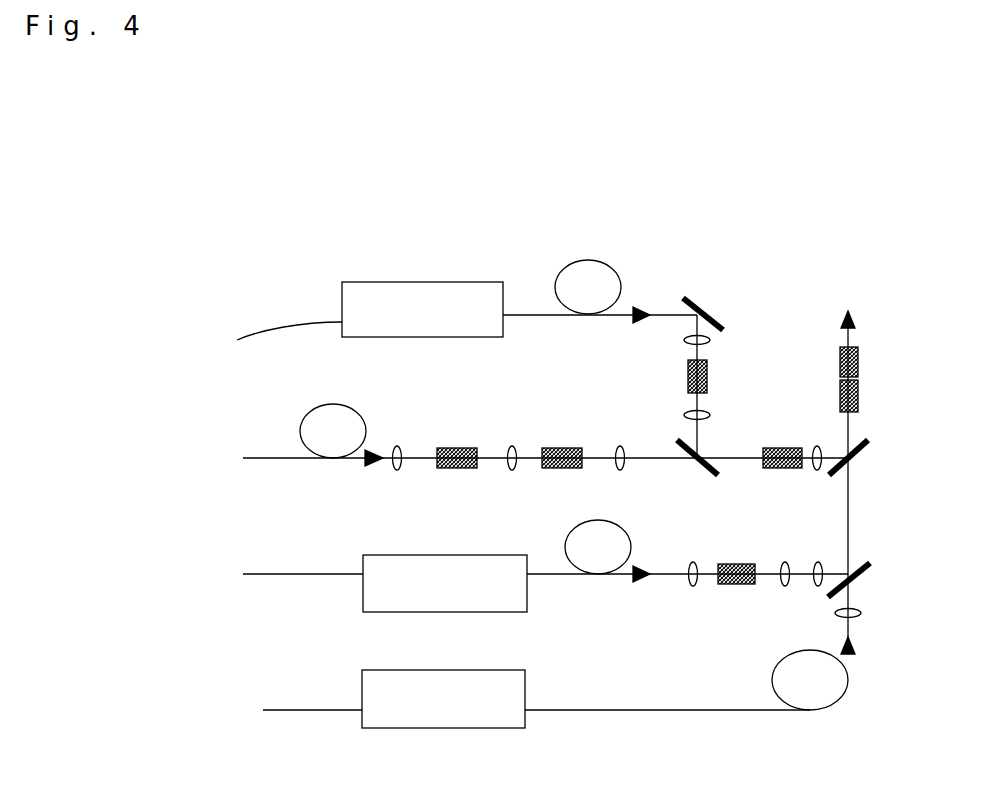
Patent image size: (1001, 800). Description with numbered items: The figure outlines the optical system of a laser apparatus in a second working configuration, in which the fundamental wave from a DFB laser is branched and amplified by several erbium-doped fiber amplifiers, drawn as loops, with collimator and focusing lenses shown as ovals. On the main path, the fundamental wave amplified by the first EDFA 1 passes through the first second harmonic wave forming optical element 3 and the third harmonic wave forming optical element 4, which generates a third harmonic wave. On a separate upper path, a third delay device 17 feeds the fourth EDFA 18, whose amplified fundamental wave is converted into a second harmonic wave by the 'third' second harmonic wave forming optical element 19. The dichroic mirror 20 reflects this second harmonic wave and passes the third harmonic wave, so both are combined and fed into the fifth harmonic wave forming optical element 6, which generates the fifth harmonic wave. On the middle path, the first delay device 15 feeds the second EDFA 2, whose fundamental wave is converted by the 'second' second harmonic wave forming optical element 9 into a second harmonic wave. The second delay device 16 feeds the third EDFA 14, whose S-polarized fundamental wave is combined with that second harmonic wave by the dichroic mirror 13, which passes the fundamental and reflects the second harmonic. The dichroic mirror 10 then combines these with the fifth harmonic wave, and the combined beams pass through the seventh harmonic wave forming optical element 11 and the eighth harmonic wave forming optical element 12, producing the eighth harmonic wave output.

The first EDFA 1 is at (352, 405).
The second EDFA 2 is at (620, 524).
The first second harmonic wave forming optical element 3 is at (450, 448).
The third harmonic wave forming optical element 4 is at (560, 448).
The fifth harmonic wave forming optical element 6 is at (785, 448).
The 'second' second harmonic wave forming optical element 9 is at (737, 564).
The dichroic mirror 10 is at (868, 440).
The seventh harmonic wave forming optical element 11 is at (858, 395).
The eighth harmonic wave forming optical element 12 is at (858, 352).
The dichroic mirror 13 is at (870, 563).
The third EDFA 14 is at (787, 656).
The first delay device 15 is at (445, 555).
The second delay device 16 is at (478, 670).
The third delay device 17 is at (412, 282).
The fourth EDFA 18 is at (608, 262).
The 'third' second harmonic wave forming optical element 19 is at (707, 375).
The dichroic mirror 20 is at (700, 472).